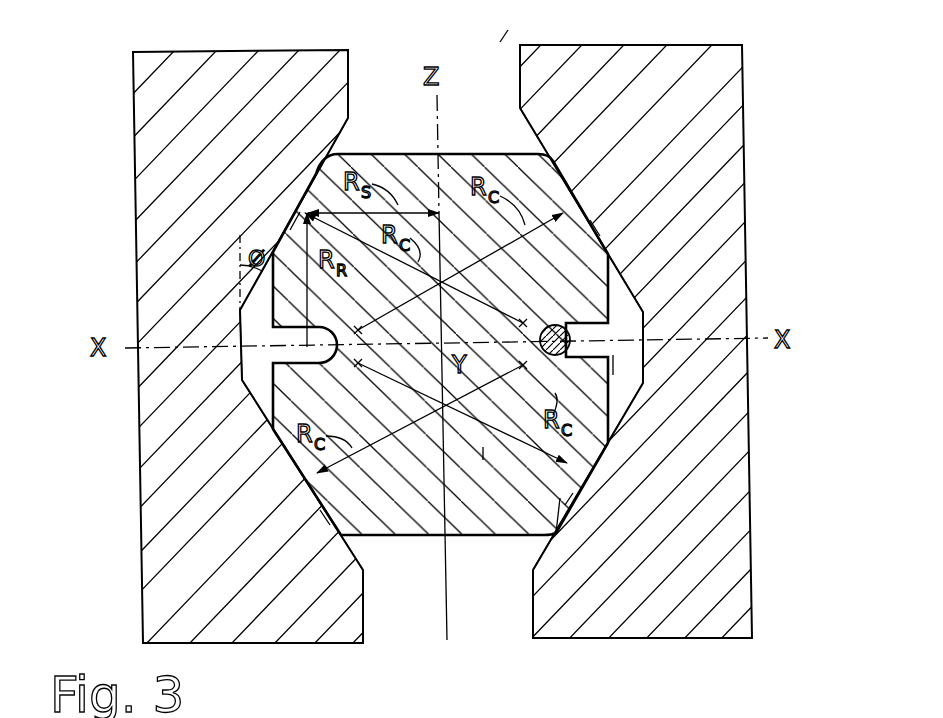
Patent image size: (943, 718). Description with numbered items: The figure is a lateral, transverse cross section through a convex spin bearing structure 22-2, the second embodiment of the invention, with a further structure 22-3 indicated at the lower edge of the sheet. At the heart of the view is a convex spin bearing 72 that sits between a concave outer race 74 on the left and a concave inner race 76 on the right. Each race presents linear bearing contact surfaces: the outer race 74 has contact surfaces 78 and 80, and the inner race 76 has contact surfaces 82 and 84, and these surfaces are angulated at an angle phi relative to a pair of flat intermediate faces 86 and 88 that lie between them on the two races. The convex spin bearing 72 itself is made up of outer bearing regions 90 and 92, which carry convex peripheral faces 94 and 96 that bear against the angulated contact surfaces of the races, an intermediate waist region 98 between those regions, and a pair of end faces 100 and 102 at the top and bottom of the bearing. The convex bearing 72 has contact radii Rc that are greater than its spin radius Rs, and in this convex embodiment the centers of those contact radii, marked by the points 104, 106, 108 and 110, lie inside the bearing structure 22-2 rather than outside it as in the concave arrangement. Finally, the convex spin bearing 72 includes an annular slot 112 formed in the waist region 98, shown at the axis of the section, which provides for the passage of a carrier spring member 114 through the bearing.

The convex spin bearing structure 22-2 is at (500, 42).
The next forging station 22-3 is at (644, 710).
The convex spin bearing 72 is at (478, 153).
The concave outer race 74 is at (148, 152).
The concave inner race 76 is at (712, 118).
The linear bearing contact surface 78 is at (336, 152).
The linear bearing contact surface 80 is at (263, 442).
The linear bearing contact surface 82 is at (552, 150).
The linear bearing contact surface 84 is at (600, 450).
The flat intermediate face 86 is at (240, 328).
The flat intermediate face 88 is at (645, 310).
The outer bearing region 90 is at (552, 168).
The outer bearing region 92 is at (560, 498).
The convex peripheral face 94 is at (300, 212).
The convex peripheral face 96 is at (320, 510).
The waist region 98 is at (613, 355).
The end face 100 is at (392, 152).
The end face 102 is at (403, 537).
The center of contact radius 104 is at (358, 328).
The center of contact radius 106 is at (358, 367).
The center of contact radius 108 is at (520, 322).
The center of contact radius 110 is at (524, 367).
The annular slot 112 is at (560, 326).
The carrier spring member 114 is at (643, 322).